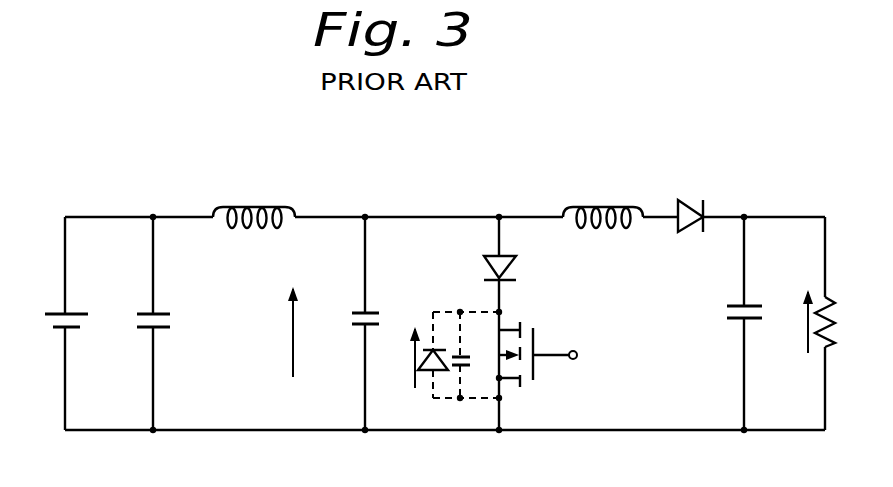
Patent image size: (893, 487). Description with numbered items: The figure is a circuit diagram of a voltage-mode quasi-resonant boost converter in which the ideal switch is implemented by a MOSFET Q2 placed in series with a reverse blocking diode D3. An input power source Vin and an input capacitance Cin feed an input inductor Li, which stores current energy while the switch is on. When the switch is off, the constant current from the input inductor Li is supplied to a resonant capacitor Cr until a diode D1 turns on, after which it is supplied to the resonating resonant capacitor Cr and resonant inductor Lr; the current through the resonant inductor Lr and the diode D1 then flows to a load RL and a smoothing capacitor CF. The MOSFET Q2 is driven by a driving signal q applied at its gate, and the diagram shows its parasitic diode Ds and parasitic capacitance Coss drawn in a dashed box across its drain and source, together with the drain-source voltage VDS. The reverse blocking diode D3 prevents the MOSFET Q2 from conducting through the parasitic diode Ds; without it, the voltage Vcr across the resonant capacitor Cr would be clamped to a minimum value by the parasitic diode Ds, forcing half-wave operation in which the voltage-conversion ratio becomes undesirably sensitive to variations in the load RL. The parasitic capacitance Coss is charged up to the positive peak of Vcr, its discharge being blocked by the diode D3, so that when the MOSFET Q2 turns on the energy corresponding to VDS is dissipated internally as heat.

The input power source Vin is at (50, 320).
The input capacitance Cin is at (172, 321).
The input inductor Li is at (258, 206).
The voltage across the resonant capacitor Vcr is at (291, 347).
The resonant capacitor Cr is at (352, 319).
The parasitic capacitance of the MOSFET Coss is at (465, 352).
The parasitic diode of the MOSFET Ds is at (430, 372).
The drain-source voltage of the MOSFET VDS is at (412, 350).
The reverse blocking diode D3 is at (518, 266).
The MOSFET Q2 is at (536, 369).
The driving signal q is at (582, 359).
The resonant inductor Lr is at (597, 206).
The diode D1 is at (692, 210).
The smoothing capacitor CF is at (724, 312).
The load RL is at (818, 343).